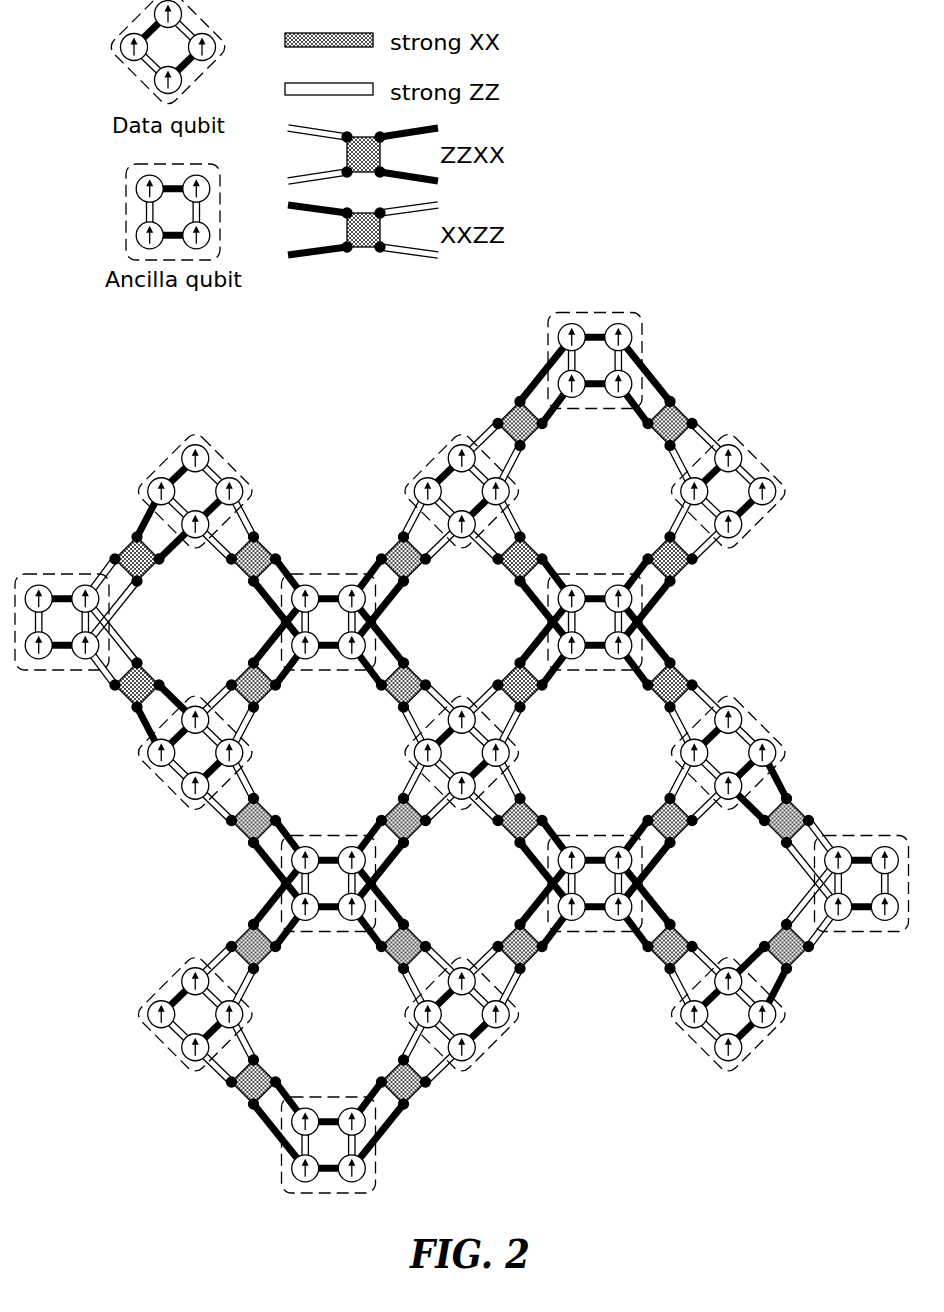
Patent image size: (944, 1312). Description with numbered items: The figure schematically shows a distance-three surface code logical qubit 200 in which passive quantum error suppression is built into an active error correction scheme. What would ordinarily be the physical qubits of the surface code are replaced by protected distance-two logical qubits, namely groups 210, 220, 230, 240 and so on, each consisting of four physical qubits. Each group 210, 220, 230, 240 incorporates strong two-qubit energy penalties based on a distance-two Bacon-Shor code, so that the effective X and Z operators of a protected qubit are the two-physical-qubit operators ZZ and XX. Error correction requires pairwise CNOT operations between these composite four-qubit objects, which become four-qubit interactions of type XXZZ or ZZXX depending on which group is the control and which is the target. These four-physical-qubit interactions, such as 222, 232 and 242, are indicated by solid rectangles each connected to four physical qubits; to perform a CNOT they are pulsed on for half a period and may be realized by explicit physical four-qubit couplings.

The qubit lattice 200 is at (178, 396).
The group of physical qubits 210 is at (547, 318).
The group of physical qubits 220 is at (452, 432).
The ZZXX coupler 222 is at (509, 411).
The group of physical qubits 230 is at (318, 575).
The coupler 232 is at (393, 538).
The ancilla qubit 240 is at (598, 575).
The coupler 242 is at (500, 583).